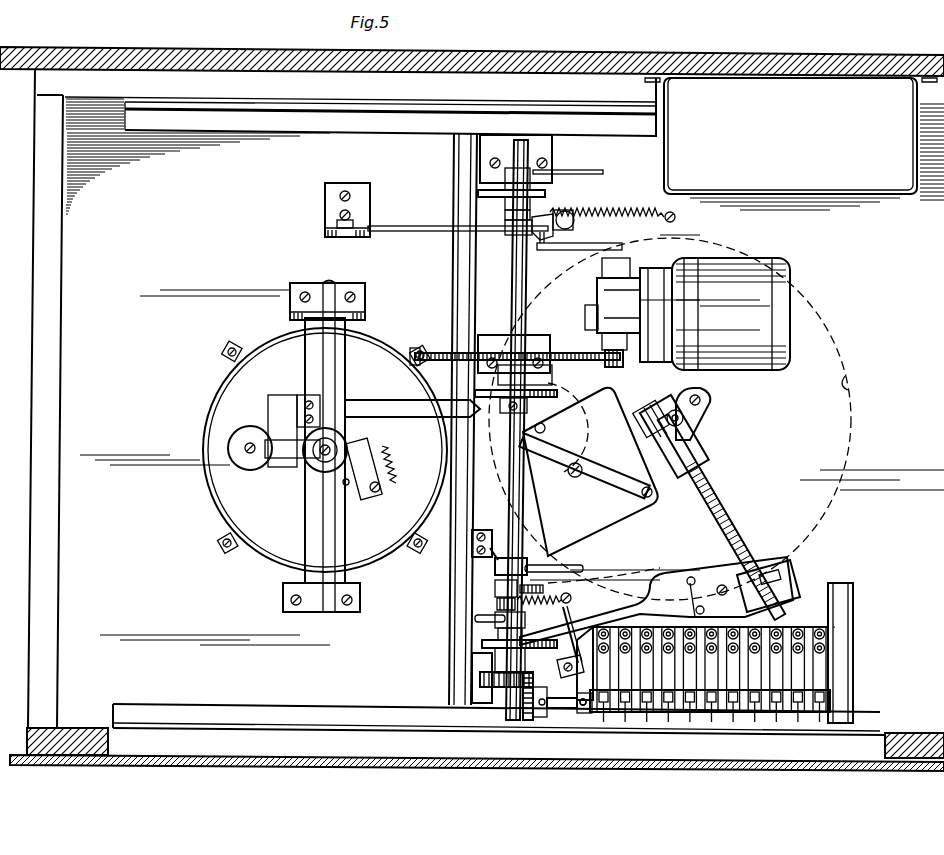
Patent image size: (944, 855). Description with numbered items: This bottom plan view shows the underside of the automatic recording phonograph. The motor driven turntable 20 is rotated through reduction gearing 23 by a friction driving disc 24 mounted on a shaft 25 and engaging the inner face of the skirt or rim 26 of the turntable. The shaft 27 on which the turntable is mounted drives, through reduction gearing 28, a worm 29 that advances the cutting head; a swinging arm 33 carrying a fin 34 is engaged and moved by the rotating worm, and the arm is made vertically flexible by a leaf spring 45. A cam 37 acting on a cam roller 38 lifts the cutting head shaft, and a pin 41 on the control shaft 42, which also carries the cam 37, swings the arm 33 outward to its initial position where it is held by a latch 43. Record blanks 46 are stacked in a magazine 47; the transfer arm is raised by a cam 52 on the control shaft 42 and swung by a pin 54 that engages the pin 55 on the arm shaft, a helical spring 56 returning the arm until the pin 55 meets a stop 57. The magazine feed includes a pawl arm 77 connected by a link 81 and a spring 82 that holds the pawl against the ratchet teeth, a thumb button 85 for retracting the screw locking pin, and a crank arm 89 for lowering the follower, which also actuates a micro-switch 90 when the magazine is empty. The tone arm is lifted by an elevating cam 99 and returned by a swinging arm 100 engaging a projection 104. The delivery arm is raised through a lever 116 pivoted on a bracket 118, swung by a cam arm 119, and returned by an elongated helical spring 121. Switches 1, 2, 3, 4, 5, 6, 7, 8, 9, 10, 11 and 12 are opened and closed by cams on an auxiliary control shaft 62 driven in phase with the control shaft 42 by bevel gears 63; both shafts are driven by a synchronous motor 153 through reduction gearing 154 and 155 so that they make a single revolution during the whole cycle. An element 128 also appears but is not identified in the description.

The turntable 20 is at (853, 427).
The reduction gearing 23 is at (592, 452).
The friction driving disc 24 is at (587, 417).
The shaft 25 is at (545, 429).
The skirt or rim 26 is at (850, 384).
The shaft 27 is at (667, 403).
The reduction gearing 28 is at (700, 433).
The worm 29 is at (728, 527).
The swinging arm 33 is at (657, 583).
The fin 34 is at (780, 563).
The cam 37 is at (488, 647).
The cam roller 38 is at (500, 636).
The pin 41 is at (483, 618).
The control shaft 42 is at (512, 532).
The latch 43 is at (568, 608).
The leaf spring 45 is at (793, 577).
The record blanks 46 is at (310, 450).
The magazine 47 is at (220, 512).
The cam 52 is at (547, 588).
The pin 54 is at (560, 566).
The pin 55 is at (500, 553).
The helical spring 56 is at (533, 606).
The stop 57 is at (478, 558).
The auxiliary control shaft 62 is at (563, 714).
The bevel gears 63 is at (523, 722).
The arm 77 is at (349, 488).
The link 81 is at (385, 408).
The spring 82 is at (388, 478).
The thumb button 85 is at (390, 445).
The crank arm 89 is at (284, 463).
The micro-switch 90 is at (291, 396).
The elevating cam 99 is at (548, 193).
The swinging arm 100 is at (578, 172).
The projection 104 is at (535, 168).
The lever 116 is at (438, 227).
The bracket 118 is at (352, 238).
The cam arm 119 is at (573, 247).
The elongated helical spring 121 is at (612, 203).
The box 128 is at (894, 196).
The synchronous motor 153 is at (747, 273).
The reduction gearing 154 is at (617, 318).
The reduction gearing 155 is at (567, 360).
The switch 1 is at (837, 692).
The switch 2 is at (817, 692).
The switch 3 is at (794, 692).
The switch 4 is at (772, 692).
The switch 5 is at (751, 692).
The switch 6 is at (729, 692).
The switch 7 is at (709, 692).
The switch 8 is at (687, 692).
The switch 9 is at (666, 692).
The switch 10 is at (643, 692).
The switch 11 is at (622, 692).
The switch 12 is at (598, 692).